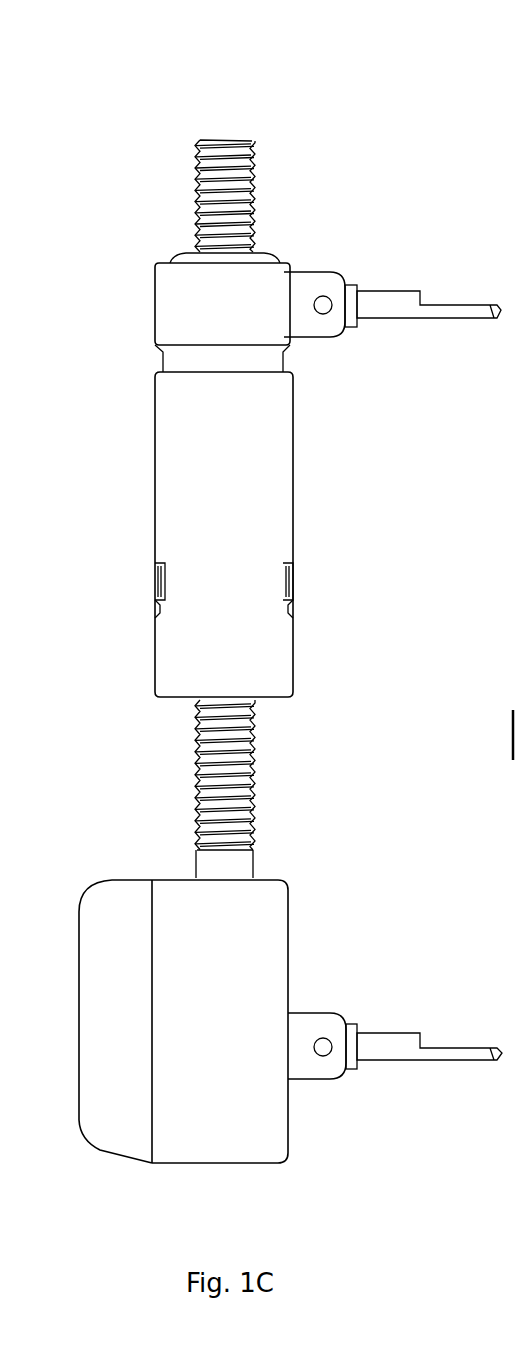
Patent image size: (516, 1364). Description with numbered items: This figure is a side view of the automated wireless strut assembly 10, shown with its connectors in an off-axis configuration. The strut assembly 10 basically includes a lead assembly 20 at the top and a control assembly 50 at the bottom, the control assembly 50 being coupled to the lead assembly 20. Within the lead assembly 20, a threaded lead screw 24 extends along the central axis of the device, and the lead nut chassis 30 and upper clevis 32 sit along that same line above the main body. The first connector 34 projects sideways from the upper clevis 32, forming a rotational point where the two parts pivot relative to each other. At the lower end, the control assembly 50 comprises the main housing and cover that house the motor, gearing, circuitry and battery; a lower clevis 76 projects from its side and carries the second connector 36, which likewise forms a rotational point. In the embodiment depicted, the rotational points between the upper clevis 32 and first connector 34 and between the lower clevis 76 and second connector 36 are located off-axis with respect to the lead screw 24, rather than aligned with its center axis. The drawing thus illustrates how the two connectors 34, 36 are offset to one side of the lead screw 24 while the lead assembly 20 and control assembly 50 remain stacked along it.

The automated wireless strut assembly 10 is at (49, 90).
The lead assembly 20 is at (96, 233).
The lead nut chassis 30 is at (268, 258).
The upper clevis 32 is at (170, 305).
The first connector 34 is at (375, 300).
The control assembly 50 is at (64, 785).
The lead screw 24 is at (252, 808).
The lower clevis 76 is at (308, 1022).
The second connector 36 is at (388, 1045).